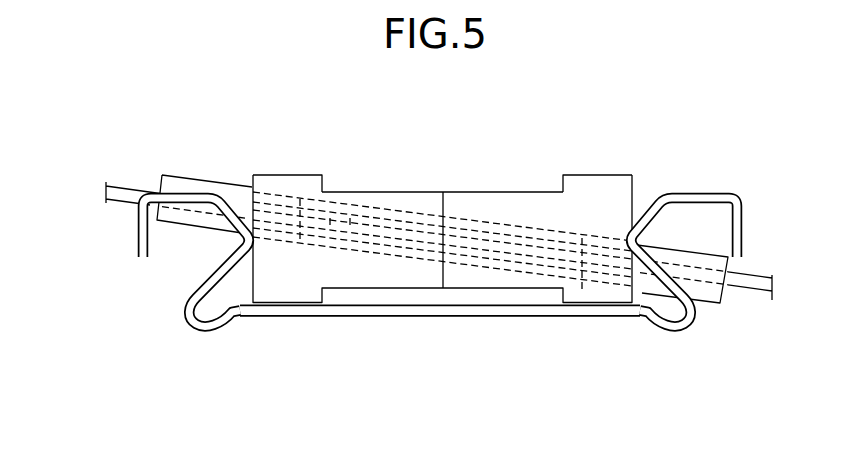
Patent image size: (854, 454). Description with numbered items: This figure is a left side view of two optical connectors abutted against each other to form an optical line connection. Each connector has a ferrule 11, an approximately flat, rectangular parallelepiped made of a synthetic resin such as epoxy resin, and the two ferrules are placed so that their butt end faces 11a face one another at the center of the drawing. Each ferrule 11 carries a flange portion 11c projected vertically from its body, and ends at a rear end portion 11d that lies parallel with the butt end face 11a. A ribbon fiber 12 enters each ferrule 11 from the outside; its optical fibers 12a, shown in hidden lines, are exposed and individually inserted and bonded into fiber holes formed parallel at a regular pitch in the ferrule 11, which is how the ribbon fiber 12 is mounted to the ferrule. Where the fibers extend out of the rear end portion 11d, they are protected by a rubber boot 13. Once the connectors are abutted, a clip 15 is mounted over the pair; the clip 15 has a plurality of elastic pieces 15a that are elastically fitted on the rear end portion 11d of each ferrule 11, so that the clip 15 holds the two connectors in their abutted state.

The ferrule 11 is at (348, 184).
The butt end face 11a is at (438, 192).
The flange portion 11c is at (286, 184).
The rear end portion 11d is at (243, 318).
The ribbon fiber 12 is at (126, 178).
The optical fibers 12a is at (398, 222).
The rubber boot 13 is at (172, 180).
The clip 15 is at (178, 308).
The elastic pieces 15a is at (205, 192).